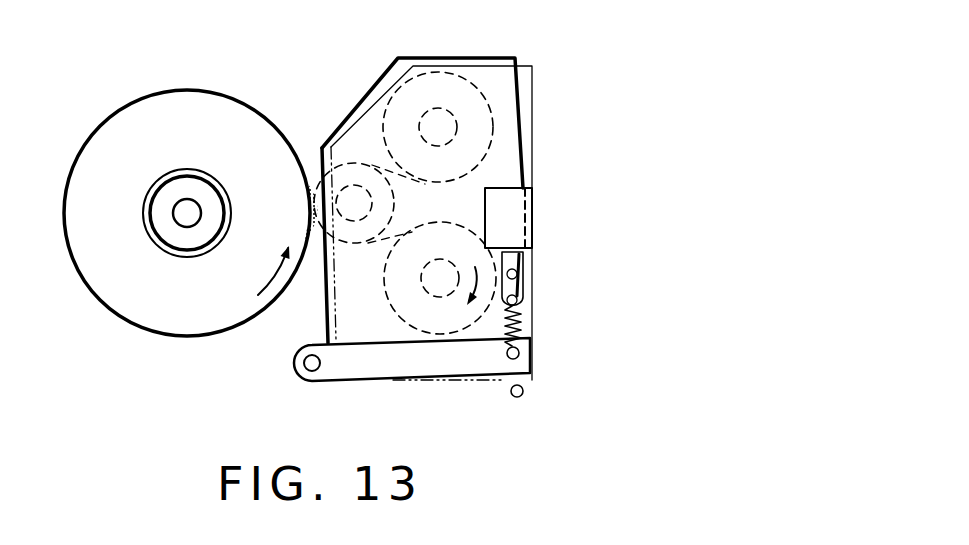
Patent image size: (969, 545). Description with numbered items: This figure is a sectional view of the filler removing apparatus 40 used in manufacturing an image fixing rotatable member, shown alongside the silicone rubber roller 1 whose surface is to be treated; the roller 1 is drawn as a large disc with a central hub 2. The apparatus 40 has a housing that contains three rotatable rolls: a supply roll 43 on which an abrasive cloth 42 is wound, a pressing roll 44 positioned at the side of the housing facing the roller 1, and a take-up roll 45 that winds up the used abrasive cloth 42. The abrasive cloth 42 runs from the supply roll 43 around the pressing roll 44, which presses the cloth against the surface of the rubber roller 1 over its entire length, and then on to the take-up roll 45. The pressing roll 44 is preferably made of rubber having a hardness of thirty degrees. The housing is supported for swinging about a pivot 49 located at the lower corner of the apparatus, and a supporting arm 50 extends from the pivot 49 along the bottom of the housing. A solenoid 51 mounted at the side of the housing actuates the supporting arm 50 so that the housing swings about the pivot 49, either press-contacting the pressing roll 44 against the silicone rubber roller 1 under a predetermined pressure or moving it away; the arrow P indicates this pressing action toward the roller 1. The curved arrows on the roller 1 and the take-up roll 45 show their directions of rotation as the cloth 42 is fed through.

The rubber roller 1 is at (150, 103).
The reel hub 2 is at (214, 201).
The filler removing apparatus 40 is at (547, 60).
The abrasive cloth 42 is at (380, 168).
The supply roll 43 is at (456, 130).
The pressing roll 44 is at (322, 178).
The take-up roll 45 is at (440, 297).
The pivot 49 is at (294, 371).
The supporting arm 50 is at (386, 364).
The solenoid 51 is at (532, 222).
The pressing direction P is at (416, 212).